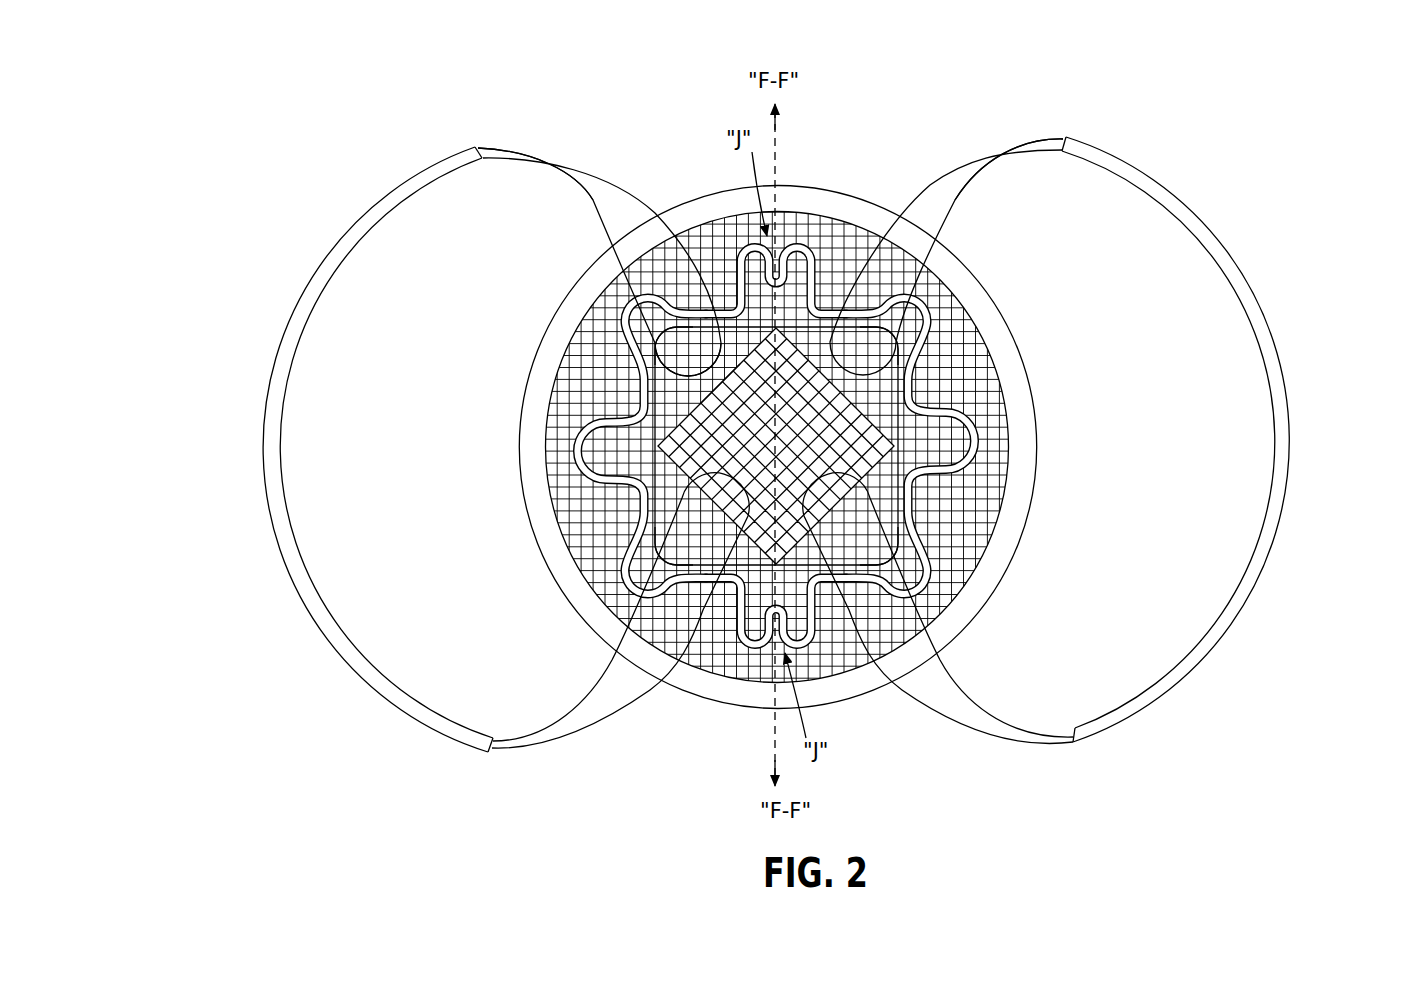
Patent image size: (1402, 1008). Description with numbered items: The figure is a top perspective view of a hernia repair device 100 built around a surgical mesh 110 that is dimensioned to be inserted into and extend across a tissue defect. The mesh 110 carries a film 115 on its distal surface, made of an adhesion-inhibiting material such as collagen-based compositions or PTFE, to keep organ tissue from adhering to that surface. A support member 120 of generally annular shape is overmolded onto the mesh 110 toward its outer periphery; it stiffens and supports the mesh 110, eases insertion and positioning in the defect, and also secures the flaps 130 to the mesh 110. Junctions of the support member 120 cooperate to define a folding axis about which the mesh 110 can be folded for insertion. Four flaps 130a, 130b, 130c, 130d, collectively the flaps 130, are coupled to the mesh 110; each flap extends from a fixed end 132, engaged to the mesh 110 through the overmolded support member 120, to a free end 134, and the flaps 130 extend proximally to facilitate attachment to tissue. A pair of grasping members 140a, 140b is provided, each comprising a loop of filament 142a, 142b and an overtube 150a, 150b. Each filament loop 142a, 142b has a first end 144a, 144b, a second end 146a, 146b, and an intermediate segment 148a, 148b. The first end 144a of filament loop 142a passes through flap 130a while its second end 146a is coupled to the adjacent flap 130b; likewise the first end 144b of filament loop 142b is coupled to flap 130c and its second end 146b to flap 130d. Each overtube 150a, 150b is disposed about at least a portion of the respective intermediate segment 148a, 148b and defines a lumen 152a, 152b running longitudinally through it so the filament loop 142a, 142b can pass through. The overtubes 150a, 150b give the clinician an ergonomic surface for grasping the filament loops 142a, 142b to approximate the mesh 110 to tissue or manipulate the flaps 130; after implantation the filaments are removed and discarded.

The hernia repair device 100 is at (956, 99).
The surgical mesh 110 is at (900, 452).
The film 115 is at (1022, 508).
The support member 120 is at (752, 238).
The flaps 130 is at (893, 310).
The flap 130a is at (868, 342).
The flap 130b is at (868, 538).
The flap 130c is at (683, 343).
The flap 130d is at (687, 550).
The fixed end 132 is at (722, 396).
The free end 134 is at (675, 328).
The grasping member 140a is at (1081, 470).
The grasping member 140b is at (469, 453).
The filament loop 142a is at (994, 173).
The filament loop 142b is at (559, 214).
The first end 144a is at (932, 180).
The first end 144b is at (553, 166).
The second end 146a is at (954, 674).
The second end 146b is at (606, 674).
The intermediate segment 148a is at (1061, 759).
The intermediate segment 148b is at (506, 128).
The overtube 150a is at (1262, 559).
The overtube 150b is at (284, 540).
The lumen 152a is at (1071, 735).
The lumen 152b is at (507, 736).